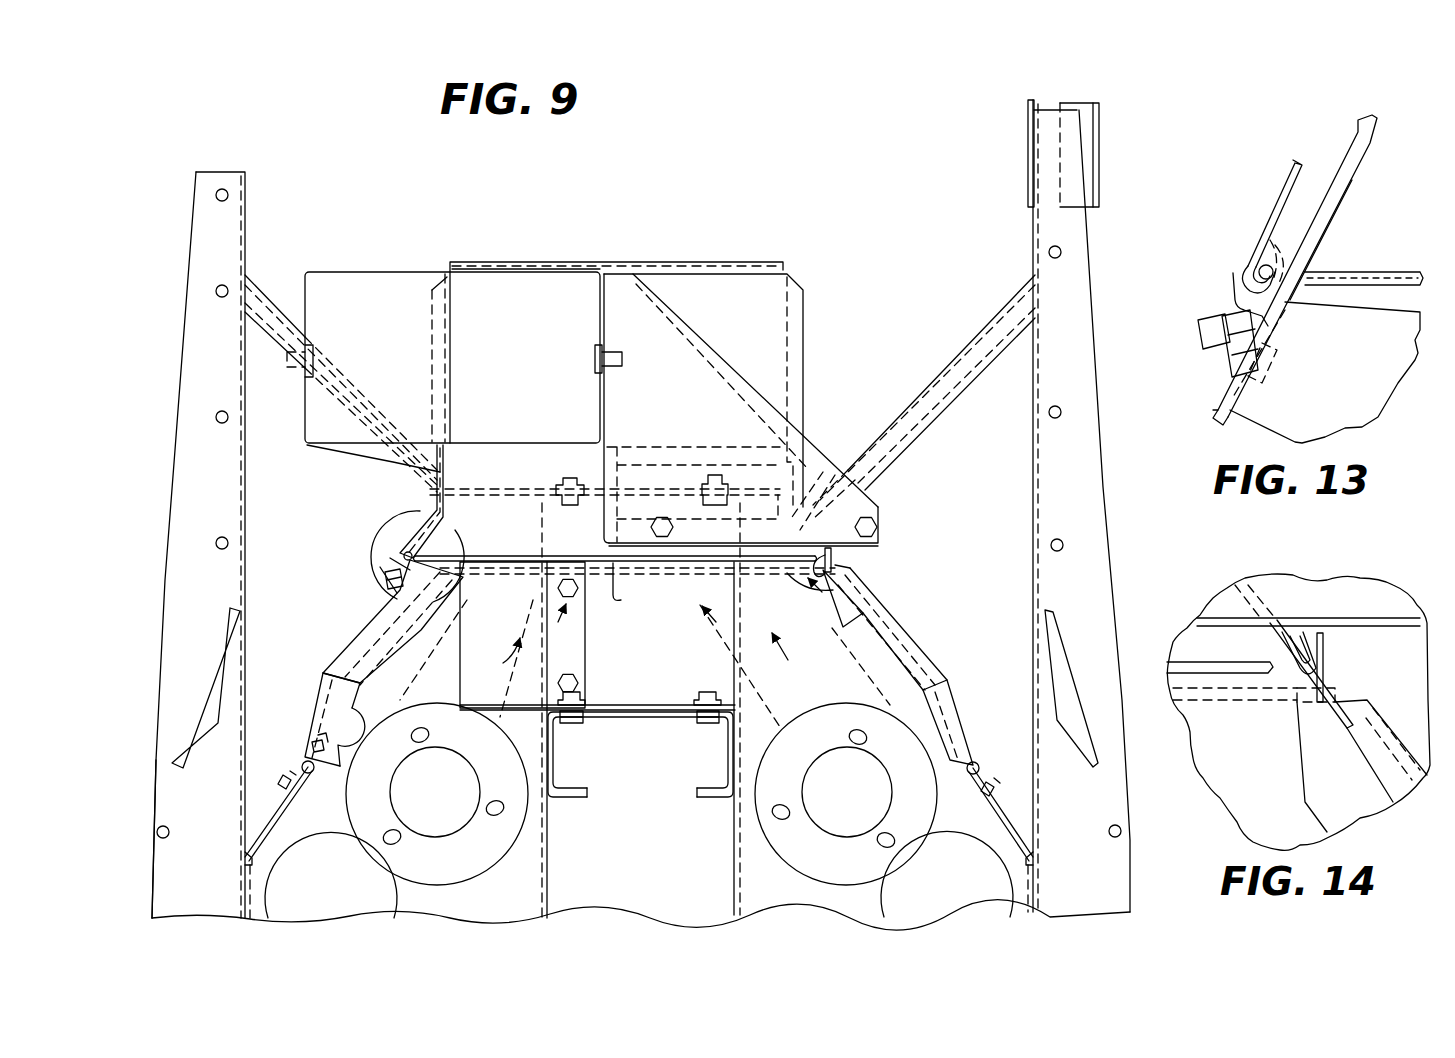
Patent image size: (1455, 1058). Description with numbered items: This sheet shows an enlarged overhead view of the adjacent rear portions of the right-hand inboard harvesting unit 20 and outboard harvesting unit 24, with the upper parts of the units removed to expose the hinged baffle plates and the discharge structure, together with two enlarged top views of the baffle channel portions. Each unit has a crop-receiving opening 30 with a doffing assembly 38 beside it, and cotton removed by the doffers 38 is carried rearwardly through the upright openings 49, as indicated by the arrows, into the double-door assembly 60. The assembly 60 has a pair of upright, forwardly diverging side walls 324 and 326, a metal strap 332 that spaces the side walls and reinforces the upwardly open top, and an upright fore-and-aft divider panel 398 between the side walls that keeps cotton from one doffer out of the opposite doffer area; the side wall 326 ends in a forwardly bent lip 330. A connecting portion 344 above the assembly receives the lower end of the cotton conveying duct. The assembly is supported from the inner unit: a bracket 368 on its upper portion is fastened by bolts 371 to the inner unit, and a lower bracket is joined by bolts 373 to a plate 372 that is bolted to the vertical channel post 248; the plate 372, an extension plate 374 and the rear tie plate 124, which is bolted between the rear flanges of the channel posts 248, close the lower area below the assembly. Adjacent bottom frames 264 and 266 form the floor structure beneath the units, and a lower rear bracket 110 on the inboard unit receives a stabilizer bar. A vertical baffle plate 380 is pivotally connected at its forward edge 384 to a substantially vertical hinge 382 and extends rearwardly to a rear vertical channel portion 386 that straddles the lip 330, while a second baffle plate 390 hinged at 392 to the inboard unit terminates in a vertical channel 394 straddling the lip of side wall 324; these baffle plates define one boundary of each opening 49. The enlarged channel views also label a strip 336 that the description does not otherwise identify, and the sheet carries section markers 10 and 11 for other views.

In FIG. 9, the section line 10- 10 is at (372, 183).
In FIG. 9, the section line 11- 11 is at (255, 225).
In FIG. 9, the inboard harvesting unit 20 is at (877, 925).
In FIG. 9, the outboard harvesting unit 24 is at (434, 925).
In FIG. 9, the crop-receiving opening 30 is at (136, 920).
In FIG. 9, the doffing assembly 38 is at (473, 874).
In FIG. 9, the upright opening 49 is at (682, 652).
In FIG. 9, the double-door assembly 60 is at (705, 248).
In FIG. 9, the lower rear bracket 110 is at (1087, 102).
In FIG. 9, the rear tie plate 124 is at (655, 714).
In FIG. 9, the channel post 248 is at (700, 797).
In FIG. 9, the bottom frame 264 is at (1030, 268).
In FIG. 9, the bottom frame 266 is at (183, 218).
In FIG. 9, the side wall 324 is at (823, 472).
In FIG. 14, the side wall 324 is at (1257, 612).
In FIG. 9, the side wall 326 is at (430, 512).
In FIG. 13, the side wall 326 is at (1360, 155).
In FIG. 9, the lip 330 is at (384, 572).
In FIG. 13, the lip 330 is at (1257, 267).
In FIG. 9, the metal strap 332 is at (533, 562).
In FIG. 13, the metal strap 332 is at (1367, 277).
In FIG. 14, the metal strap 332 is at (1243, 665).
In FIG. 13, the spring strip 336 is at (1273, 215).
In FIG. 9, the connecting portion 344 is at (305, 414).
In FIG. 9, the bracket 368 is at (735, 382).
In FIG. 9, the bolts 371 is at (674, 527).
In FIG. 9, the plate 372 is at (668, 664).
In FIG. 9, the bolts 373 is at (556, 486).
In FIG. 9, the extension plate 374 is at (523, 624).
In FIG. 9, the vertical baffle plate 380 is at (350, 648).
In FIG. 9, the vertical hinge 382 is at (309, 777).
In FIG. 9, the forward edge 384 is at (333, 778).
In FIG. 9, the rear vertical channel portion 386 is at (400, 545).
In FIG. 9, the second baffle plate 390 is at (955, 698).
In FIG. 9, the hinge 392 is at (976, 764).
In FIG. 9, the vertical channel 394 is at (845, 566).
In FIG. 14, the vertical channel 394 is at (1323, 665).
In FIG. 9, the divider panel 398 is at (622, 600).